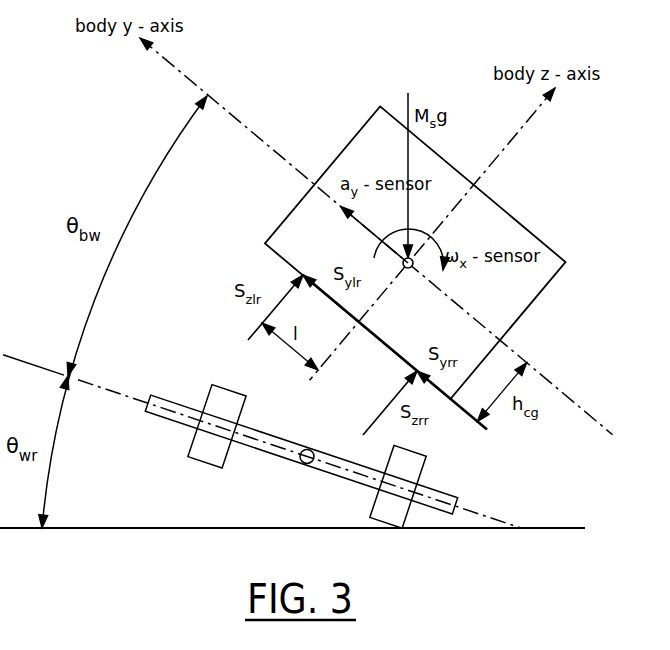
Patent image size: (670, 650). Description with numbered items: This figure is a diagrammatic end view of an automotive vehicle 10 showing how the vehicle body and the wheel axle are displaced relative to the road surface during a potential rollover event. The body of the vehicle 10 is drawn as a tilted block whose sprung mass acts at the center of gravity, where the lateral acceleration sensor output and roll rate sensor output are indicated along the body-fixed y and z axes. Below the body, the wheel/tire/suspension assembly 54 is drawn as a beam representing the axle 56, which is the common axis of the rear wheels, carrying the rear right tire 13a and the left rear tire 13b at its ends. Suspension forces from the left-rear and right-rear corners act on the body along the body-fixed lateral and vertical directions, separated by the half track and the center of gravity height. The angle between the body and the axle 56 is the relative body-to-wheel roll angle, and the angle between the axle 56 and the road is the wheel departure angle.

The automotive vehicle 10 is at (528, 231).
The wheel/tire/suspension assembly 54 is at (181, 404).
The axle 56 is at (268, 434).
The rear right tire 13a is at (392, 516).
The left rear tire 13b is at (207, 463).